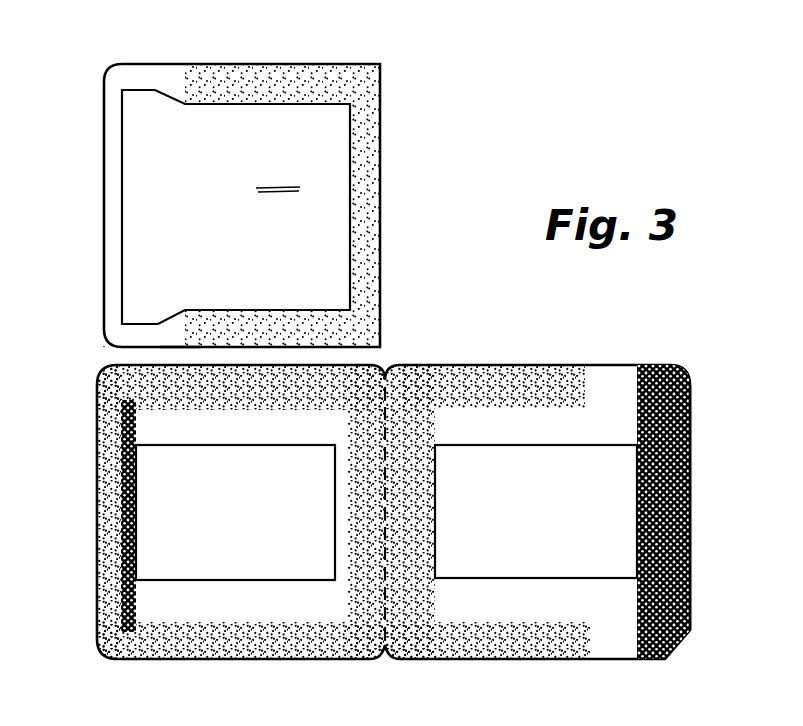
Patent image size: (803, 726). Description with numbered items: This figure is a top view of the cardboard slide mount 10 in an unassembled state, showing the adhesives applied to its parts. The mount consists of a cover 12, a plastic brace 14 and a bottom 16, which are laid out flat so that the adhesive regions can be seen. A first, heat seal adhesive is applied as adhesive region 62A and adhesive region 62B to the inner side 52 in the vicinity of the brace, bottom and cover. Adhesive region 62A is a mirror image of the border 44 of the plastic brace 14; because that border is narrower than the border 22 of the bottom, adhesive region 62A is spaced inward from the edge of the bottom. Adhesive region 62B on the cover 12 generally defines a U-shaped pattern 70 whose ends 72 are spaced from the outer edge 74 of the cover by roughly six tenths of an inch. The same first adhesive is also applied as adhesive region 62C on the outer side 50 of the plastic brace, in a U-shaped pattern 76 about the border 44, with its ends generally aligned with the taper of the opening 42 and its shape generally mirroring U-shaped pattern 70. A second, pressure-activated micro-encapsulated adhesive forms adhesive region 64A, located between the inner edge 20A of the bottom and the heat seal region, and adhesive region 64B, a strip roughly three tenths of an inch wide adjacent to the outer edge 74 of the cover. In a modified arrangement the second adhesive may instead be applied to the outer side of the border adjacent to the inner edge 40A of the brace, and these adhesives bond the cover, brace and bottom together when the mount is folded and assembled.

The cardboard slide mount 10 is at (72, 181).
The cover 12 is at (401, 505).
The plastic brace 14 is at (283, 187).
The bottom 16 is at (175, 367).
The inner edge 20A is at (138, 482).
The border 22 is at (325, 648).
The inner edge 40A is at (124, 211).
The opening 42 is at (278, 172).
The border 44 is at (255, 338).
The outer side 50 is at (207, 75).
The inner side 52 is at (258, 660).
The adhesive region 62A is at (305, 383).
The adhesive region 62B is at (110, 473).
The adhesive region 62C is at (350, 66).
The adhesive region 64A is at (138, 525).
The adhesive region 64B is at (690, 488).
The U-shaped pattern 70 is at (576, 366).
The ends 72 is at (590, 640).
The outer edge 74 is at (690, 416).
The U-shaped pattern 76 is at (383, 141).